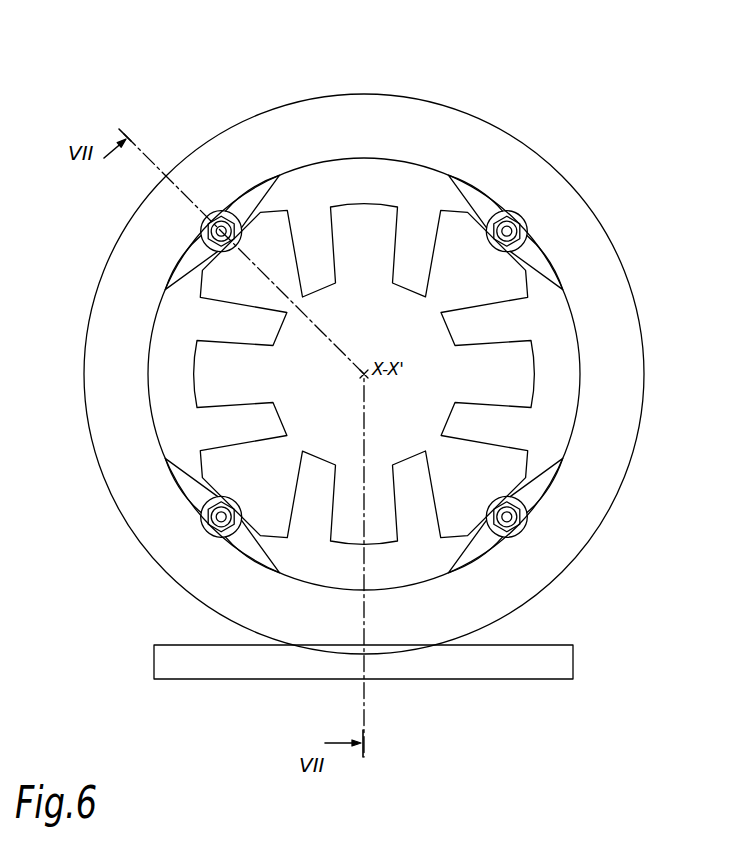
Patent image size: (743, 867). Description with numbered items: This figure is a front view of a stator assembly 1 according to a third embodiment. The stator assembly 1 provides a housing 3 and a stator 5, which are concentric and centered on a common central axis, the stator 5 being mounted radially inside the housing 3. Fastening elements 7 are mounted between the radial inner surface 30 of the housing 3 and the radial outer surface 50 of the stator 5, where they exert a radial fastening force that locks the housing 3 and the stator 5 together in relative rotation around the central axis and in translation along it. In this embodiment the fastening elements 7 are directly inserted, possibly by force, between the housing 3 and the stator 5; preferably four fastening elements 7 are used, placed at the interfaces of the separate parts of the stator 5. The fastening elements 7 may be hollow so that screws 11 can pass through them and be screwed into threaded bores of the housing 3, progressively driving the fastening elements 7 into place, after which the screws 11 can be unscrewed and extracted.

The stator assembly 1 is at (640, 148).
The housing 3 is at (548, 198).
The stator 5 is at (557, 390).
The fastening element 7 is at (207, 222).
The screw 11 is at (222, 230).
The radial inner surface of the housing 30 is at (344, 166).
The radial outer surface of the stator 50 is at (303, 163).